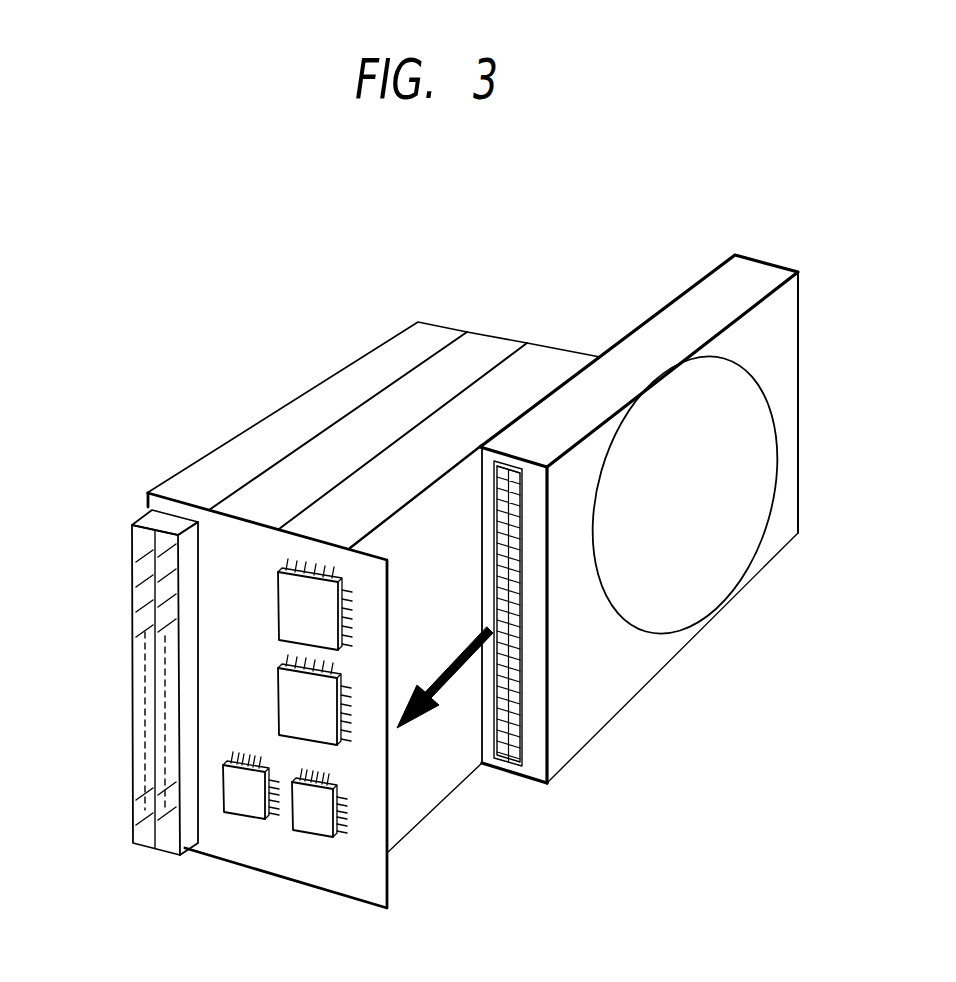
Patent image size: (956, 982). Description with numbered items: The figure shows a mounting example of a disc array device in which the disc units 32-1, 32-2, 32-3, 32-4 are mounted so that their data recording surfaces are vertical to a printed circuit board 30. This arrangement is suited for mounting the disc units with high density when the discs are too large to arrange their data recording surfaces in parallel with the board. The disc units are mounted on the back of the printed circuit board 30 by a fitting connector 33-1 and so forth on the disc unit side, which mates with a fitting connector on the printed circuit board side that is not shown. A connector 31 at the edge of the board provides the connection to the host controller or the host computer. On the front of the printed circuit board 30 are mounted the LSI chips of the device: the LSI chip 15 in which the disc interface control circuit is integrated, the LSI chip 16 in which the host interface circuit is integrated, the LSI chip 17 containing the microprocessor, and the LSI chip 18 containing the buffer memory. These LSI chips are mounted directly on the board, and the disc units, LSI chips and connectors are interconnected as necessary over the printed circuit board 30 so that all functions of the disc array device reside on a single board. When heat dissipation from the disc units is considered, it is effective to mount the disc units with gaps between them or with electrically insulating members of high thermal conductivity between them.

The LSI chip 15 is at (243, 805).
The LSI chip 16 is at (315, 818).
The LSI chip 17 is at (293, 707).
The LSI chip 18 is at (295, 618).
The printed circuit board 30 is at (327, 890).
The connector 31 is at (132, 665).
The disc unit 32-1 is at (750, 272).
The disc unit 32-2 is at (545, 367).
The disc unit 32-3 is at (485, 353).
The disc unit 32-4 is at (428, 341).
The fitting connector 33-1 is at (513, 680).